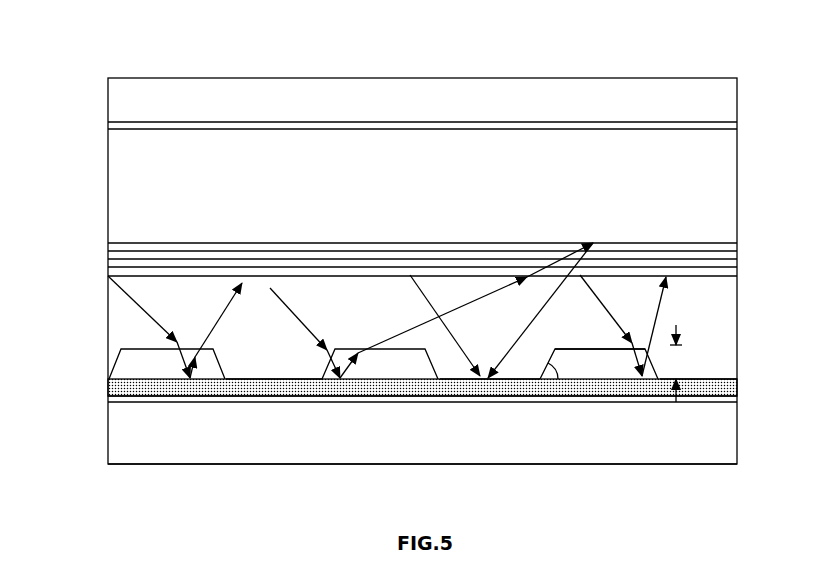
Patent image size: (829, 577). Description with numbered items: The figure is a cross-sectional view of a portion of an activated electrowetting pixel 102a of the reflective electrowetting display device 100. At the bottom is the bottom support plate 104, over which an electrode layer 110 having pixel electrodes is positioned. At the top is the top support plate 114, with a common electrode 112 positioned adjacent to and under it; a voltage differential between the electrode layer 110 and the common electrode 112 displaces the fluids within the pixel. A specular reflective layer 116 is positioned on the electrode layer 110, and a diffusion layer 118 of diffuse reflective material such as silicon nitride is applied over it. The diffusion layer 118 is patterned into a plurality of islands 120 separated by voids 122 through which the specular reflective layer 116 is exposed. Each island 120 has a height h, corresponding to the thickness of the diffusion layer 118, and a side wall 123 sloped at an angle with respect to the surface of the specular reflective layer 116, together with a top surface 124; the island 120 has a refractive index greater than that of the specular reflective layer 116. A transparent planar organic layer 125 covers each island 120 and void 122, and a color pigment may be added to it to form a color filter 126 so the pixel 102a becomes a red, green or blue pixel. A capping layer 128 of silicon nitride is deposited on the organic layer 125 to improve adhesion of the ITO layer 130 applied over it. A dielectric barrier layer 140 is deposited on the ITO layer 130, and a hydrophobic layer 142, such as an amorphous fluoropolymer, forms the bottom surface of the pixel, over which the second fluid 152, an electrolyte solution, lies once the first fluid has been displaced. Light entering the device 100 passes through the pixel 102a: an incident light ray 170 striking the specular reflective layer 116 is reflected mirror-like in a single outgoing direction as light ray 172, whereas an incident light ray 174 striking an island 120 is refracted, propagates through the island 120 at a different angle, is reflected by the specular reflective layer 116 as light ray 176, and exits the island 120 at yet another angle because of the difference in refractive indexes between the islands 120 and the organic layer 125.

The reflective electrowetting display device 100 is at (165, 50).
The electrowetting pixel 102a is at (550, 430).
The bottom support plate 104 is at (187, 440).
The electrode layer 110 is at (106, 397).
The common electrode 112 is at (527, 125).
The top support plate 114 is at (645, 88).
The specular reflective layer 116 is at (138, 388).
The diffusion layer 118 is at (105, 366).
The islands 120 is at (220, 362).
The voids 122 is at (463, 367).
The side wall 123 is at (548, 365).
The top surface 124 is at (590, 348).
The organic layer 125 is at (108, 325).
The color filter 126 is at (186, 298).
The capping layer 128 is at (728, 272).
The ITO layer 130 is at (685, 258).
The dielectric barrier layer 140 is at (265, 243).
The hydrophobic layer 142 is at (200, 242).
The second fluid 152 is at (420, 187).
The light ray 170 is at (425, 295).
The light ray 172 is at (550, 300).
The light ray 174 is at (295, 312).
The light ray 176 is at (400, 343).
The height h is at (678, 332).